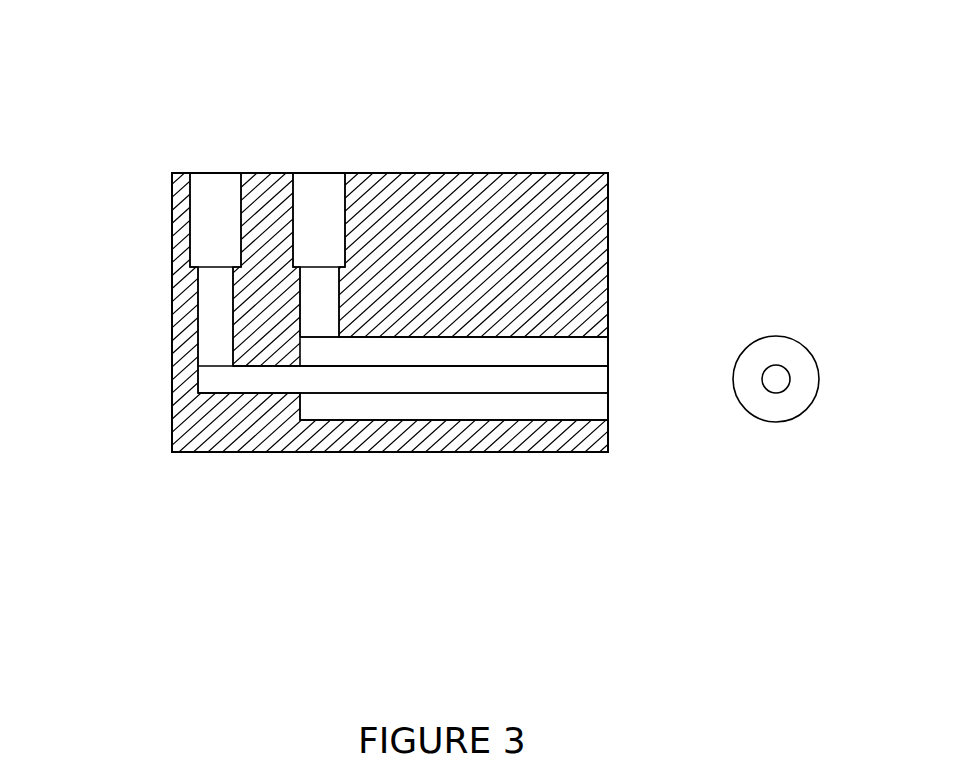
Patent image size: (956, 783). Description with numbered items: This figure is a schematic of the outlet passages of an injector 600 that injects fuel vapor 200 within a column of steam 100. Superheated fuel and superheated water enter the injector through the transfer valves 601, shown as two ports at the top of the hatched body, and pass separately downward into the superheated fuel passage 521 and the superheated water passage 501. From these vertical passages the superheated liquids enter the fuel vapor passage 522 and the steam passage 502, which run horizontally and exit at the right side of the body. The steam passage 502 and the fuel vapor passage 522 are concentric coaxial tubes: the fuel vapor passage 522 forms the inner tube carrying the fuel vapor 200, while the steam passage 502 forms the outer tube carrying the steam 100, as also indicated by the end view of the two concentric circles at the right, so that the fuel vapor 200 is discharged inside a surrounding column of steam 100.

The injector 600 is at (138, 113).
The transfer valves 601 is at (317, 195).
The superheated water passage 501 is at (320, 295).
The superheated fuel passage 521 is at (213, 302).
The fuel vapor passage 522 is at (257, 383).
The steam passage 502 is at (413, 350).
The steam 100 is at (592, 412).
The fuel vapor 200 is at (225, 380).